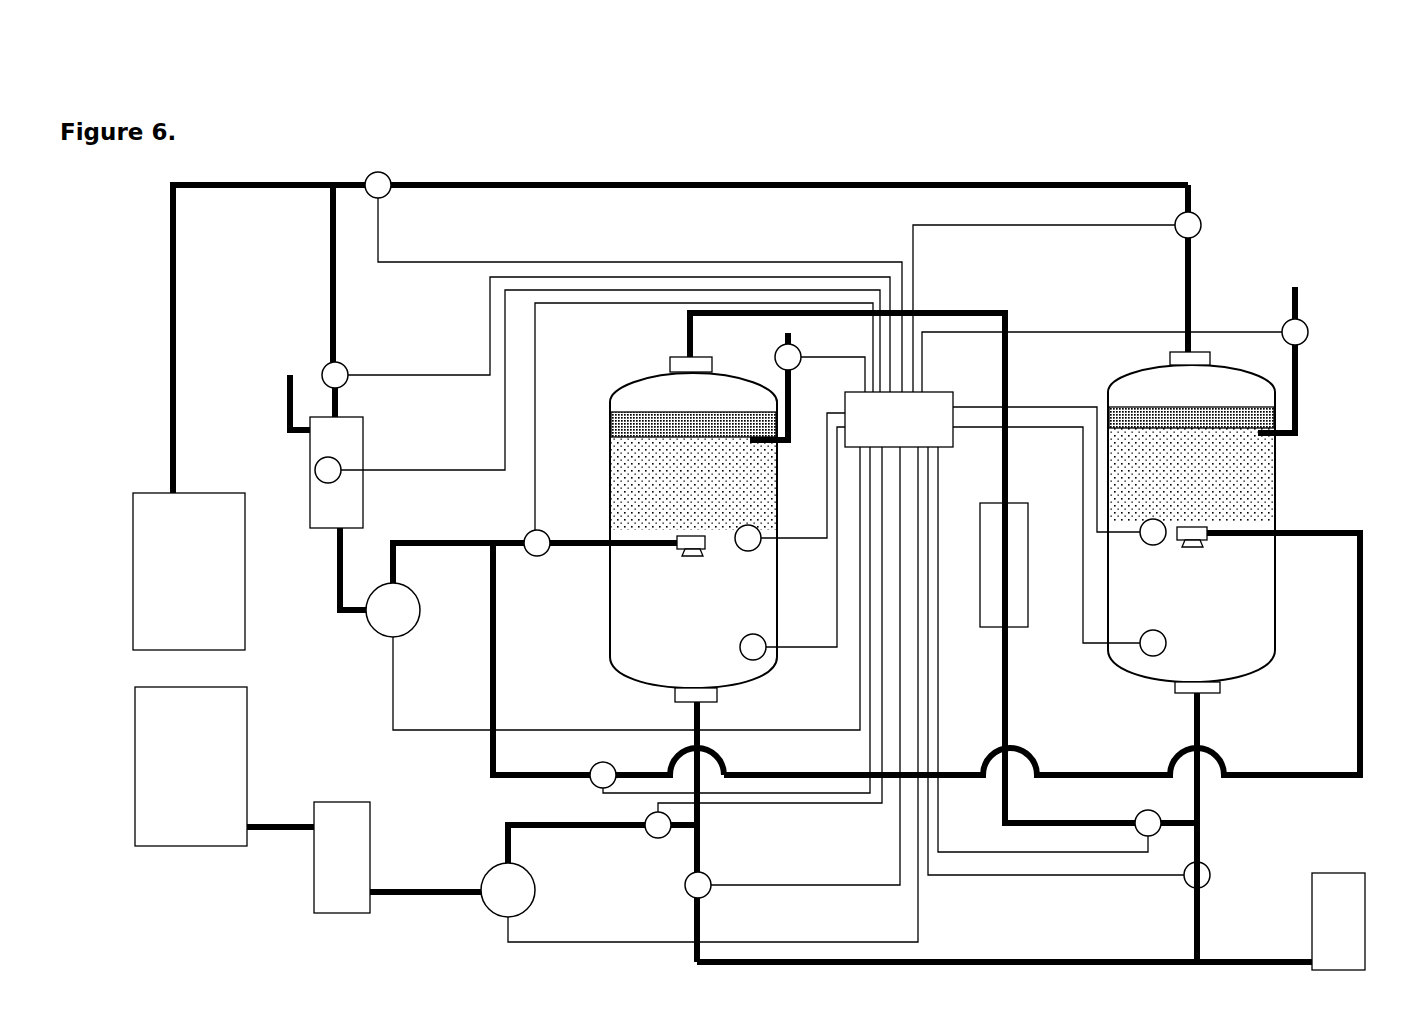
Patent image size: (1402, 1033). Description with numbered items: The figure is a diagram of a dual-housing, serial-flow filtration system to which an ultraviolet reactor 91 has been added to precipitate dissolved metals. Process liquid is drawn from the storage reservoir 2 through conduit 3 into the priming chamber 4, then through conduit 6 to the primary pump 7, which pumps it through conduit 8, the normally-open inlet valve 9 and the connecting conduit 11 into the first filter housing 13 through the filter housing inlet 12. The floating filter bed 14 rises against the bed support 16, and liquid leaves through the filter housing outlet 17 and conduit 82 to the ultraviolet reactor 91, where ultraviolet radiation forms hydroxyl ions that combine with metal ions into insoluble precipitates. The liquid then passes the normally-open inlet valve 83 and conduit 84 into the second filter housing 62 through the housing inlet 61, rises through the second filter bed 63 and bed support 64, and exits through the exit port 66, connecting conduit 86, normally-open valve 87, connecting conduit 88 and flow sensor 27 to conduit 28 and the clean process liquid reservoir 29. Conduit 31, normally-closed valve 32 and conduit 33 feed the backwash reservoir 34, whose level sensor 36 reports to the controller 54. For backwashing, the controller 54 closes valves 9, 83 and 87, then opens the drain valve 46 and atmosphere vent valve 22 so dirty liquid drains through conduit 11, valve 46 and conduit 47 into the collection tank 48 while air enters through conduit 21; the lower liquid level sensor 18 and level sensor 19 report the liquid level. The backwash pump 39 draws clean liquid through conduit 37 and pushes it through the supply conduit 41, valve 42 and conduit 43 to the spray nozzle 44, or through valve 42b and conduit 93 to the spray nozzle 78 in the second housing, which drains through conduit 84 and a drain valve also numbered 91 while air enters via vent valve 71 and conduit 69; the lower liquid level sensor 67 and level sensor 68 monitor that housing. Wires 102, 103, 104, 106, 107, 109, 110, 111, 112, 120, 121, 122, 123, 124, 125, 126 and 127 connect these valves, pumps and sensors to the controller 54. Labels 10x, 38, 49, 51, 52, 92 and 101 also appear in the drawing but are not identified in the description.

The storage reservoir 2 is at (270, 875).
The conduit 3 is at (283, 817).
The priming chamber 4 is at (378, 828).
The conduit 6 is at (415, 883).
The primary pump 7 is at (483, 912).
The conduit 8 is at (592, 833).
The normally open inlet valve 9 is at (652, 843).
The transfer line 10x is at (1042, 654).
The connecting conduit 11 is at (705, 825).
The filter housing inlet 12 is at (723, 695).
The first filter housing 13 is at (605, 650).
The filter bed 14 is at (652, 483).
The bed support 16 is at (650, 428).
The filter housing outlet 17 is at (668, 368).
The lower liquid level sensor 18 is at (770, 657).
The level sensor 19 is at (762, 550).
The conduit 21 is at (797, 380).
The atmosphere vent valve 22 is at (772, 352).
The flow sensor 27 is at (397, 205).
The conduit 28 is at (182, 305).
The clean process liquid reservoir 29 is at (252, 617).
The conduit 31 is at (340, 297).
The normally-closed valve 32 is at (350, 362).
The conduit 33 is at (343, 402).
The backwash reservoir 34 is at (373, 440).
The level sensor 36 is at (340, 482).
The conduit 37 is at (333, 580).
The gas inlet 38 is at (280, 393).
The backwash pump 39 is at (423, 627).
The supply conduit 41 is at (437, 553).
The normally-closed valve 42 is at (525, 525).
The normally-closed valve 42b is at (592, 765).
The conduit 43 is at (600, 535).
The backwash spray nozzle 44 is at (683, 553).
The liquid drain valve 46 is at (712, 897).
The conduit 47 is at (945, 950).
The collection tank 48 is at (1335, 867).
The lower vessel region 49 is at (691, 656).
The vessel interior 51 is at (699, 604).
The gas recirculation loop 52 is at (295, 272).
The controller 54 is at (960, 450).
The housing inlet 61 is at (1222, 697).
The second filter housing 62 is at (1275, 672).
The second filter bed 63 is at (1250, 488).
The bed support 64 is at (1138, 410).
The exit port 66 is at (1165, 352).
The lower liquid level sensor 67 is at (1135, 652).
The level sensor 68 is at (1133, 540).
The conduit 69 is at (1305, 387).
The atmospheric vent valve 71 is at (1320, 315).
The backwash spray nozzle 78 is at (1213, 545).
The conduit 82 is at (1005, 308).
The normally-open inlet valve 83 is at (1128, 812).
The conduit 84 is at (1208, 793).
The connecting conduit 86 is at (1180, 275).
The normally-open valve 87 is at (1175, 217).
The connecting conduit 88 is at (860, 192).
The ultraviolet exposure reactor 91 is at (1020, 495).
The waste line 92 is at (1238, 945).
The conduit 93 is at (733, 770).
The control line 101 is at (553, 935).
The wire 102 is at (783, 877).
The wire 103 is at (797, 808).
The wire 104 is at (405, 690).
The wire 106 is at (805, 640).
The wire 107 is at (800, 530).
The wire 109 is at (497, 403).
The wire 110 is at (488, 313).
The wire 111 is at (820, 352).
The wire 112 is at (490, 257).
The wire 120 is at (545, 328).
The wire 121 is at (595, 797).
The wire 122 is at (1130, 883).
The wire 123 is at (950, 708).
The wire 124 is at (1090, 648).
The wire 125 is at (978, 400).
The wire 126 is at (1110, 325).
The wire 127 is at (935, 250).